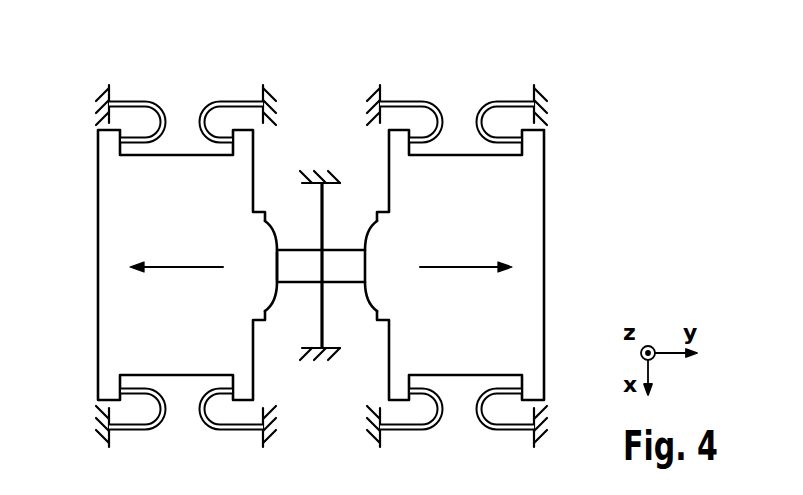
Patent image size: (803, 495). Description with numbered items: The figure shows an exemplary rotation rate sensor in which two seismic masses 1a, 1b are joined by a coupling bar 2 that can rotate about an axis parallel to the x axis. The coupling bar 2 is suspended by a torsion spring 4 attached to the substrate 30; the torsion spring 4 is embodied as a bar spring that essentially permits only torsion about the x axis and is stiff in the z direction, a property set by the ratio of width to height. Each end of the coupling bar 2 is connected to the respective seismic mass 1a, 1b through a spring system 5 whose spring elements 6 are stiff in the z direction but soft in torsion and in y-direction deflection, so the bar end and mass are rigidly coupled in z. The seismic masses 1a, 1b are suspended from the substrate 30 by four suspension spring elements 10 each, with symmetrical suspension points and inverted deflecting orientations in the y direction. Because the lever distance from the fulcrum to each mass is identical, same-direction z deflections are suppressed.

The seismic mass 1a is at (96, 245).
The seismic mass 1b is at (546, 245).
The coupling bar 2 is at (344, 266).
The torsion spring 4 is at (328, 228).
The spring system 5 is at (280, 298).
The spring element 6 is at (278, 228).
The suspension spring element 10 is at (495, 83).
The substrate 30 is at (278, 97).